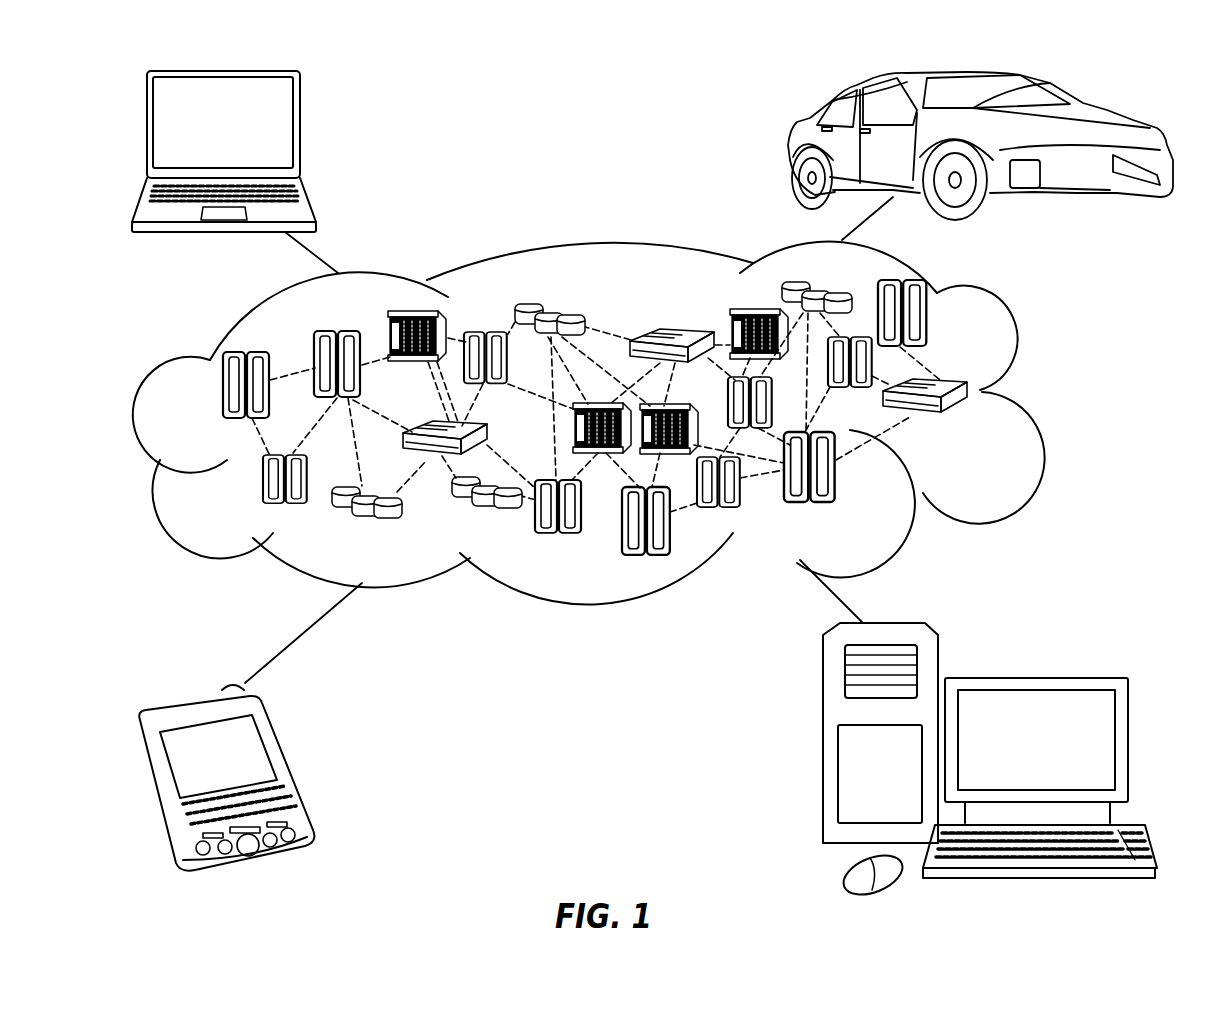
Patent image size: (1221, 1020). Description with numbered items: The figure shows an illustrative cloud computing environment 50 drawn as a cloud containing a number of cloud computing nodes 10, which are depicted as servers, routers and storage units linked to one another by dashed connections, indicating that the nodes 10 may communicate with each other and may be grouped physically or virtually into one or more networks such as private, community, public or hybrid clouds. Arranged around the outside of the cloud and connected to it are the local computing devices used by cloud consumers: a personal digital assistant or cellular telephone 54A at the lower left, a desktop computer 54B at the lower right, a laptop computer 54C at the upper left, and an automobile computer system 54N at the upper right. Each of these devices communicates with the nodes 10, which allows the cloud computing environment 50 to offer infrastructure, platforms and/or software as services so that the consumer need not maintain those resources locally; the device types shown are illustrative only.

The cloud computing nodes 10 is at (976, 428).
The cloud computing environment 50 is at (1035, 393).
The personal digital assistant or cellular telephone 54A is at (290, 768).
The desktop computer 54B is at (1035, 677).
The laptop computer 54C is at (300, 130).
The automobile computer system 54N is at (790, 143).